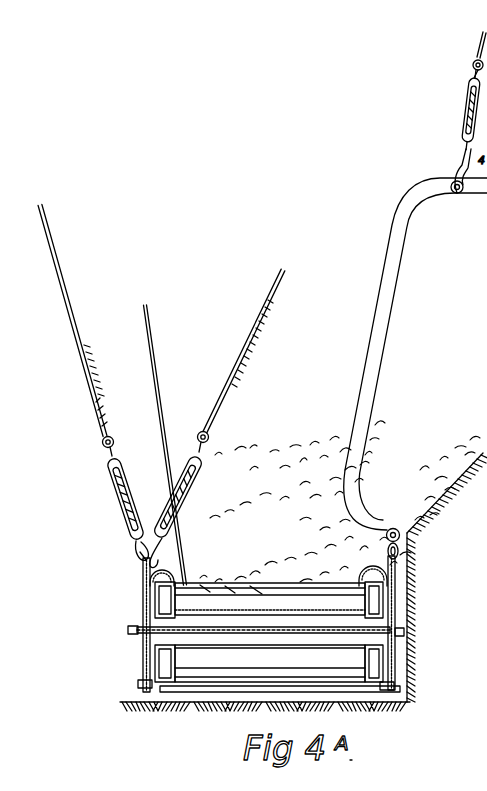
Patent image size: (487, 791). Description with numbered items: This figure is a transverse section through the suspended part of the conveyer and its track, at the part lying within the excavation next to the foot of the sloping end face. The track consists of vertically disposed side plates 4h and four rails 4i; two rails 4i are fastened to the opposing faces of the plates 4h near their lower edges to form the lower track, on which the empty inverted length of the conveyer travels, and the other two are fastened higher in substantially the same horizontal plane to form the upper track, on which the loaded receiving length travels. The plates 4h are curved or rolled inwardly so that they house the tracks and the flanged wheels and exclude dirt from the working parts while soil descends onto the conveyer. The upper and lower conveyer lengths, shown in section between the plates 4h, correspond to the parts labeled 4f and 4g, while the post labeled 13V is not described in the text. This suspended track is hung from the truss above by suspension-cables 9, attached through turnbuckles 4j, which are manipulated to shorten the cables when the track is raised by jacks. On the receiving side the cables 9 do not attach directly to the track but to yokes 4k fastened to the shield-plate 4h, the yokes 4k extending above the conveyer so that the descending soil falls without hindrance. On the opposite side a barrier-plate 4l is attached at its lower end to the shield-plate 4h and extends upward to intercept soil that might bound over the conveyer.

The suspension-cables 9 is at (73, 266).
The barrier-plate 4l is at (165, 445).
The turnbuckles 4j is at (117, 510).
The yokes 4k is at (393, 345).
The side plates 4h is at (422, 567).
The upper roller 4f is at (269, 600).
The lower roller 4g is at (269, 663).
The rails 4i is at (150, 626).
The frame post 13V is at (405, 628).